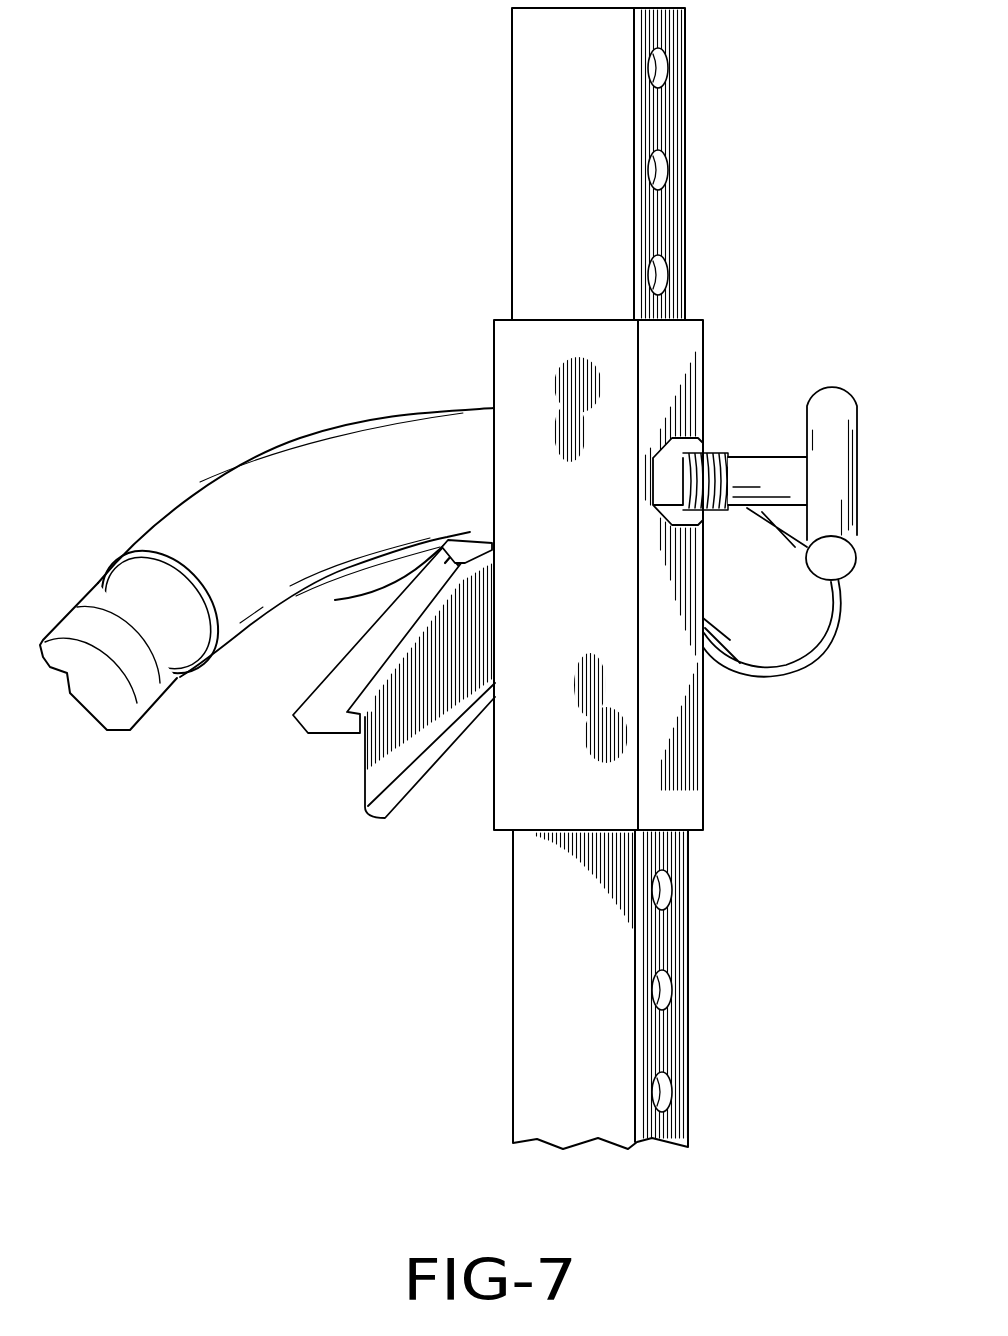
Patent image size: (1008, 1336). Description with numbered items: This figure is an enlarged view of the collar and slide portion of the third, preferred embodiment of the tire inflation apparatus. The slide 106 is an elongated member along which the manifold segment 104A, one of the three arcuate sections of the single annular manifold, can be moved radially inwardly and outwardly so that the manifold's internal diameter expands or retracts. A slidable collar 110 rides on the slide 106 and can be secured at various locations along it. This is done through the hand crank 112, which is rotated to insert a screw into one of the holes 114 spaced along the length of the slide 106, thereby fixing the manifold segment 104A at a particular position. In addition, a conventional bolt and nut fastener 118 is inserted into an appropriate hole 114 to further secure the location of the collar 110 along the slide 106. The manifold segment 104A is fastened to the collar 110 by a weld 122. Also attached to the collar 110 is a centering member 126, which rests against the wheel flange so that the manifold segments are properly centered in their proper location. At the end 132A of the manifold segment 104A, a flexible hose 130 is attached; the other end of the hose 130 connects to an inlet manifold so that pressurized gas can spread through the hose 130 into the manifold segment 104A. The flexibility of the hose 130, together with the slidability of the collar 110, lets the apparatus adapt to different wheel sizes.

The manifold segment 104A is at (292, 487).
The slide 106 is at (568, 118).
The slidable collar 110 is at (660, 737).
The hand crank 112 is at (835, 403).
The holes 114 is at (660, 70).
The bolt and nut fastener 118 is at (722, 457).
The weld 122 is at (335, 600).
The centering member 126 is at (378, 787).
The hose 130 is at (148, 690).
The end of manifold segment 132A is at (167, 543).